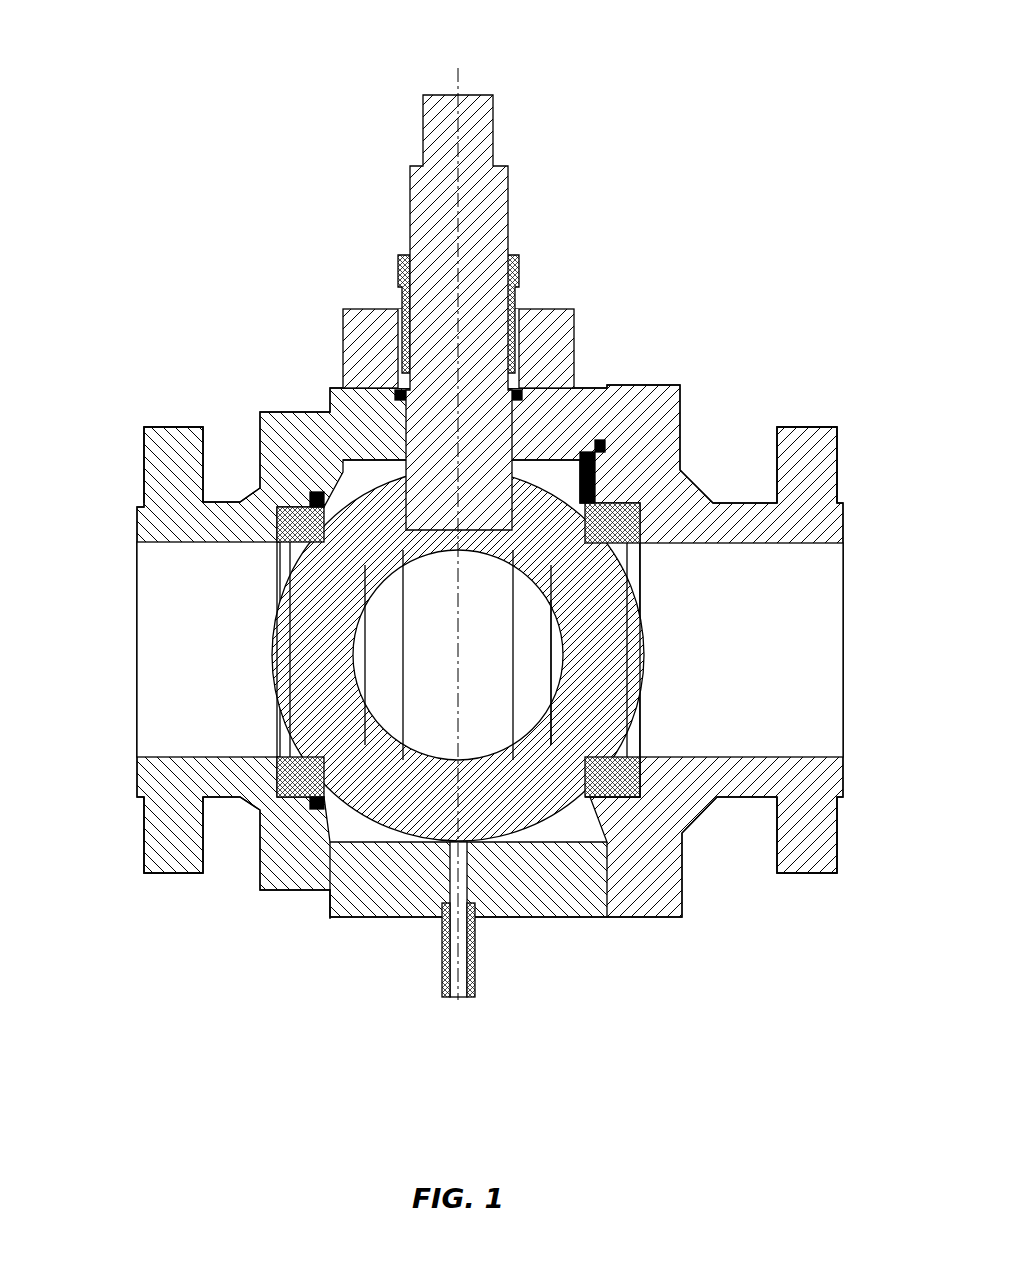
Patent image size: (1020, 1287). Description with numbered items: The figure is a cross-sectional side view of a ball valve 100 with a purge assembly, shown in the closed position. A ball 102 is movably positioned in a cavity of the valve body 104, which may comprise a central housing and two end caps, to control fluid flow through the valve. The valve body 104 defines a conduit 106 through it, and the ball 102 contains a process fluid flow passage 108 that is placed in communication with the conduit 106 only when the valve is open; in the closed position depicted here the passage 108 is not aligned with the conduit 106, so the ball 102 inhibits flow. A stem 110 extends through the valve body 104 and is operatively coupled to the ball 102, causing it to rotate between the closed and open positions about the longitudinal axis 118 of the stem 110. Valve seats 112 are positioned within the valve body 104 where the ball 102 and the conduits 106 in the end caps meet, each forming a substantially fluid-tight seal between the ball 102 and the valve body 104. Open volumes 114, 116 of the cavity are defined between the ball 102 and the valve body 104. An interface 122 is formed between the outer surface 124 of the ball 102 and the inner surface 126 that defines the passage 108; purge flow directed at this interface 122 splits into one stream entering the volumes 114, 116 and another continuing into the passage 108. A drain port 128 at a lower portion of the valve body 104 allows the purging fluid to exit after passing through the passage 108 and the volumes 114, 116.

The valve 100 is at (710, 200).
The ball 102 is at (308, 722).
The valve body 104 is at (170, 523).
The conduit 106 is at (815, 612).
The process fluid flow passage 108 is at (387, 683).
The stem 110 is at (475, 150).
The valve seat 112 is at (311, 520).
The volume 114 is at (372, 468).
The volume 116 is at (332, 810).
The longitudinal axis 118 is at (458, 517).
The interface 122 is at (612, 590).
The outer surface 124 is at (550, 720).
The inner surface 126 is at (600, 745).
The drain port 128 is at (458, 982).